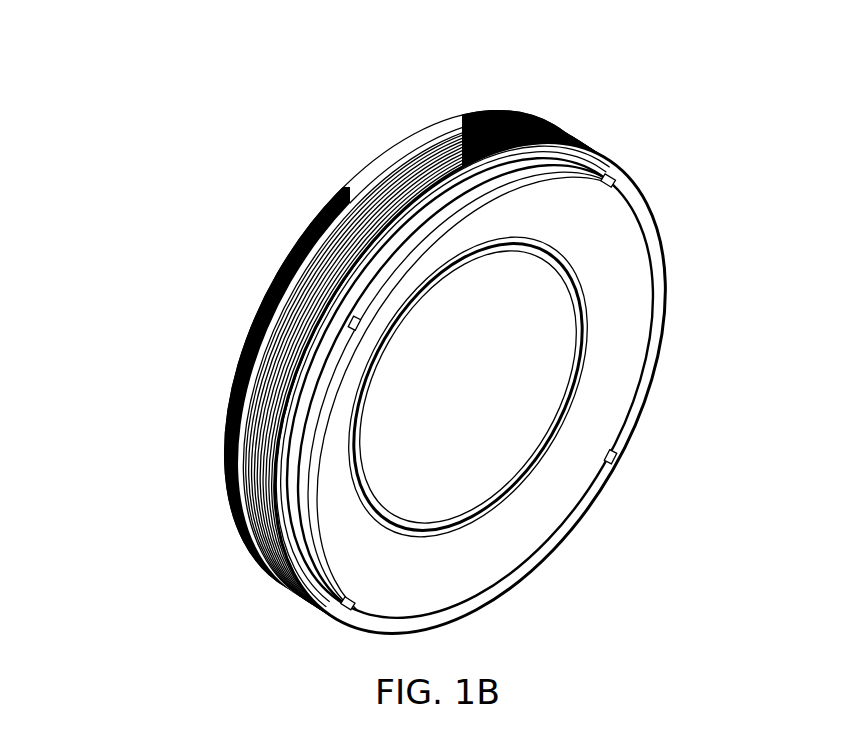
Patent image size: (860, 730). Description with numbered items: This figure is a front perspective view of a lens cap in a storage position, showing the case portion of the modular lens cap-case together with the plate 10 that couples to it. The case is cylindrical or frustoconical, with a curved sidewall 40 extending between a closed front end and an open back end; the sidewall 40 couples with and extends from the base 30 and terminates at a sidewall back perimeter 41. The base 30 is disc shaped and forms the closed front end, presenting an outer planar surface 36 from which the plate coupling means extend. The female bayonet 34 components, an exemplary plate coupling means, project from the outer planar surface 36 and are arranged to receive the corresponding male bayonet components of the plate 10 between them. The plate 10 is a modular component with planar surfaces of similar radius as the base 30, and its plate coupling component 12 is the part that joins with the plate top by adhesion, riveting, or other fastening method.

The plate 10 is at (274, 195).
The plate coupling component 12 is at (340, 194).
The base 30 is at (585, 285).
The female bayonet 34 is at (612, 183).
The outer planar surface 36 is at (617, 325).
The sidewall 40 is at (268, 372).
The sidewall back perimeter 41 is at (238, 444).